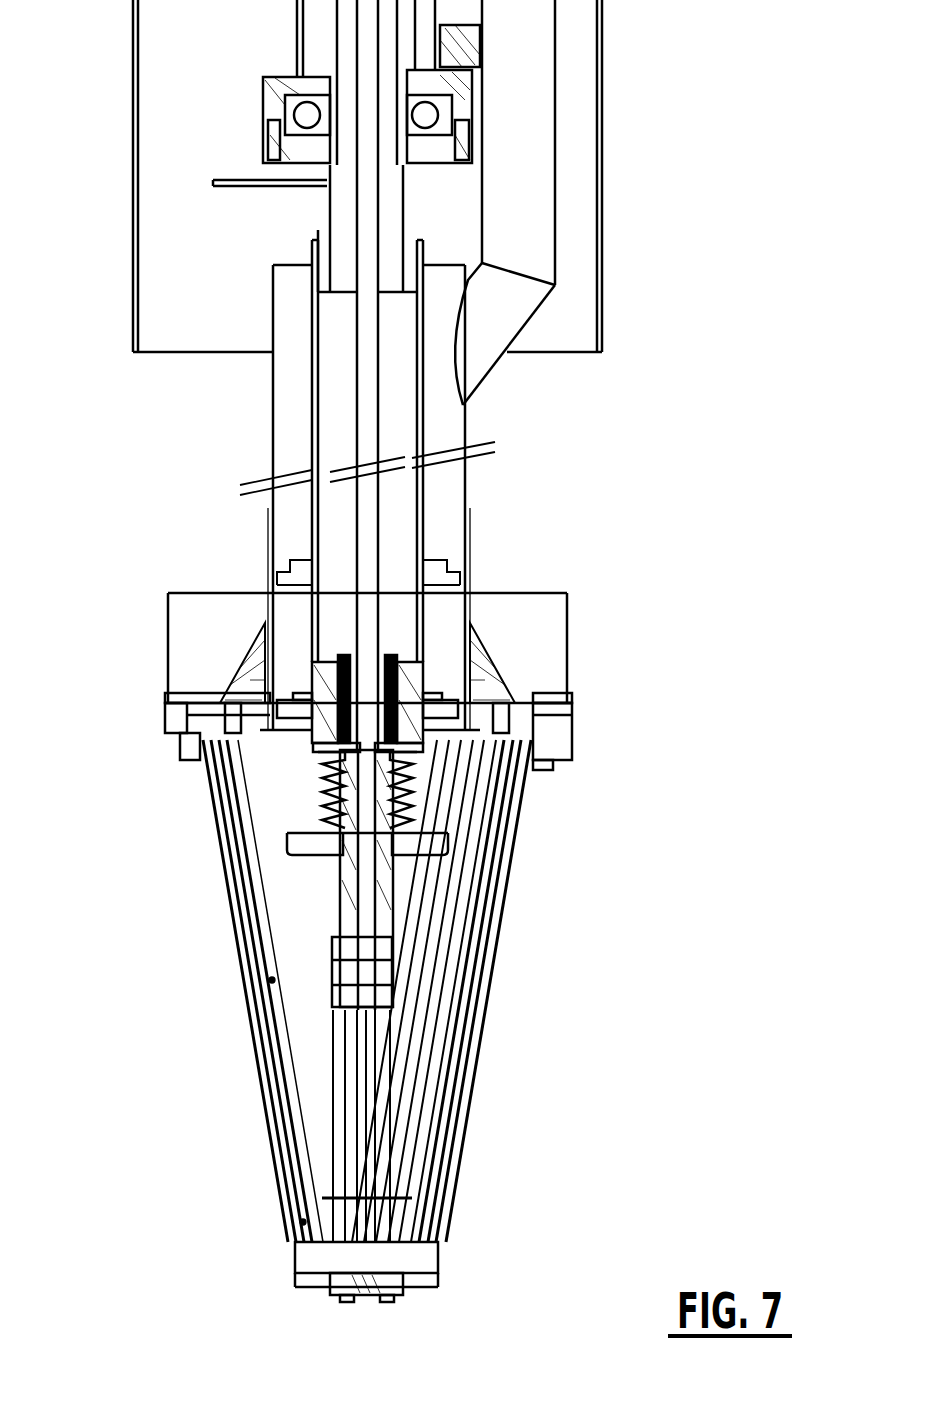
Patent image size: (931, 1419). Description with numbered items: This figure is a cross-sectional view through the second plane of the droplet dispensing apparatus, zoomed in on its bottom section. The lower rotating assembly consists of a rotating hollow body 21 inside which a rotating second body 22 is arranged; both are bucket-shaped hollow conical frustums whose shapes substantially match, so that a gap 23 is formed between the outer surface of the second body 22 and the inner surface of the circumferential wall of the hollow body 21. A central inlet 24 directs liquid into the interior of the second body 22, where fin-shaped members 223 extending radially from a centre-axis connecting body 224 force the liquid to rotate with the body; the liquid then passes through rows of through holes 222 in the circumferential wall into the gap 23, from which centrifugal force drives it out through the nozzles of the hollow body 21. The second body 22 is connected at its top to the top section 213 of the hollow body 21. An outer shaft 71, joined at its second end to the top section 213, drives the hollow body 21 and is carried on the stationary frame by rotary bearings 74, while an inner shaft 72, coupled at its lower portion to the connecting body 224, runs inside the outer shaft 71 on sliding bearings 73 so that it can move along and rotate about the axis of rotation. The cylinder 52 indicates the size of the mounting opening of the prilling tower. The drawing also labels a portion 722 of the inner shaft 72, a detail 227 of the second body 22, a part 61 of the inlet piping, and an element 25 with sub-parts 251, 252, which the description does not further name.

The hollow body 21 is at (440, 1253).
The second body 22 is at (465, 1077).
The gap 23 is at (452, 1168).
The central inlet 24 is at (447, 432).
The bearing housing 25 is at (200, 697).
The wedge 251 is at (243, 693).
The ring 252 is at (227, 715).
The top section of the hollow body 213 is at (535, 708).
The through holes 222 is at (307, 793).
The fin-shaped members 223 is at (290, 932).
The centre-axis connecting body 224 is at (390, 912).
The support 227 is at (530, 767).
The nut 722 is at (367, 937).
The cylinder 52 is at (603, 303).
The bracket 61 is at (508, 325).
The outer shaft 71 is at (412, 227).
The inner shaft 72 is at (363, 270).
The sliding bearings 73 is at (386, 120).
The rotary bearings 74 is at (305, 113).